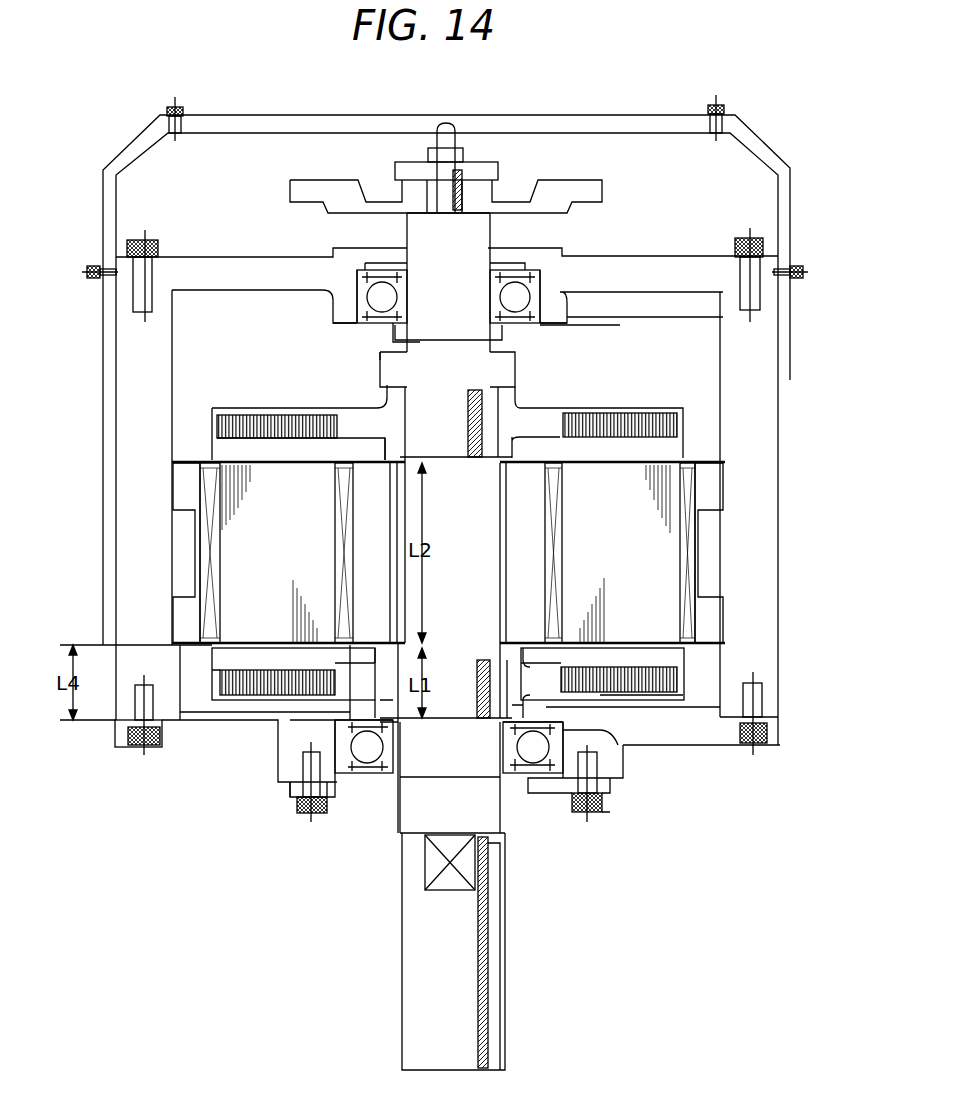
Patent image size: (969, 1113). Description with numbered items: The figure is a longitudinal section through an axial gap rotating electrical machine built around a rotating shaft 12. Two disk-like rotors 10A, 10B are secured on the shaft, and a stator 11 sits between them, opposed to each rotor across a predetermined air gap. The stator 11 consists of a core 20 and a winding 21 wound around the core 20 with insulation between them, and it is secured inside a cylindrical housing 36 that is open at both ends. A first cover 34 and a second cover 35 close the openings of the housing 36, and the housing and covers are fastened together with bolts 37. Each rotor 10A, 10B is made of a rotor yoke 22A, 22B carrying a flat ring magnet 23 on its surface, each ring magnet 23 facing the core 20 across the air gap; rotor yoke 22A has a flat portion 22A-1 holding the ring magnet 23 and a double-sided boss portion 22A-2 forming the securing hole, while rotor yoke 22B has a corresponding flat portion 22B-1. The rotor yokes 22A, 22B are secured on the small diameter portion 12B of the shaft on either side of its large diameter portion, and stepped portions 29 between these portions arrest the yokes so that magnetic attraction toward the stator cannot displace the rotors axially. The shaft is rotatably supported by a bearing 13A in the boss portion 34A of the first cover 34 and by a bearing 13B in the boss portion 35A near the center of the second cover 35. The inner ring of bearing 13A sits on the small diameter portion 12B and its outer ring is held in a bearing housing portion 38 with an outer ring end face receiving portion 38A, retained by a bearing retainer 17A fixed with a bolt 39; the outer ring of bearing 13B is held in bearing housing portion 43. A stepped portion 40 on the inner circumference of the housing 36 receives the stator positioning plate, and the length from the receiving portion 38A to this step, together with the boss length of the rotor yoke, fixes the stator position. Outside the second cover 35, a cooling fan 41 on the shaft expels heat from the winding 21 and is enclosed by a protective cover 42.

The protective cover 42 is at (133, 148).
The cooling fan 41 is at (587, 190).
The bearing housing portion 43 is at (357, 278).
The second cover 35 is at (226, 266).
The boss portion 35A is at (357, 310).
The bearing 13B is at (520, 297).
The bolt 37 is at (753, 297).
The bolt 39 is at (717, 338).
The housing 36 is at (755, 440).
The rotor yoke 22B is at (640, 406).
The flat portion 22B-1 is at (533, 437).
The rotor 10B is at (240, 404).
The ring magnet 23 is at (230, 445).
The stepped portion 29 is at (432, 447).
The stator 11 is at (640, 495).
The rotating shaft 12 is at (475, 560).
The winding 21 is at (688, 522).
The core 20 is at (653, 587).
The stepped portion 40 is at (165, 640).
The rotor 10A is at (690, 675).
The rotor yoke 22A is at (687, 690).
The flat portion 22A-1 is at (540, 733).
The double-sided boss portion 22A-2 is at (388, 692).
The bearing 13A is at (553, 772).
The bearing housing portion 38 is at (567, 730).
The outer ring end face receiving portion 38A is at (330, 717).
The first cover 34 is at (680, 733).
The boss portion 34A is at (290, 763).
The bearing retainer 17A is at (342, 790).
The small diameter portion 12B is at (418, 835).